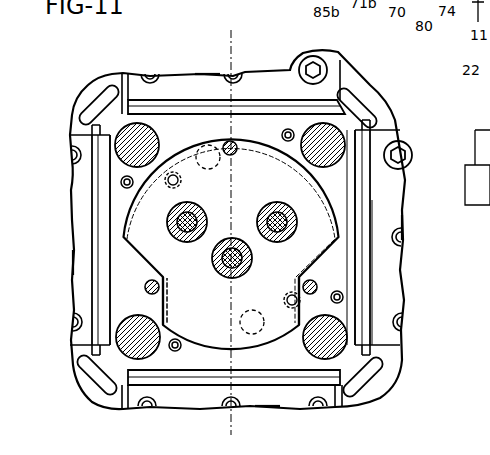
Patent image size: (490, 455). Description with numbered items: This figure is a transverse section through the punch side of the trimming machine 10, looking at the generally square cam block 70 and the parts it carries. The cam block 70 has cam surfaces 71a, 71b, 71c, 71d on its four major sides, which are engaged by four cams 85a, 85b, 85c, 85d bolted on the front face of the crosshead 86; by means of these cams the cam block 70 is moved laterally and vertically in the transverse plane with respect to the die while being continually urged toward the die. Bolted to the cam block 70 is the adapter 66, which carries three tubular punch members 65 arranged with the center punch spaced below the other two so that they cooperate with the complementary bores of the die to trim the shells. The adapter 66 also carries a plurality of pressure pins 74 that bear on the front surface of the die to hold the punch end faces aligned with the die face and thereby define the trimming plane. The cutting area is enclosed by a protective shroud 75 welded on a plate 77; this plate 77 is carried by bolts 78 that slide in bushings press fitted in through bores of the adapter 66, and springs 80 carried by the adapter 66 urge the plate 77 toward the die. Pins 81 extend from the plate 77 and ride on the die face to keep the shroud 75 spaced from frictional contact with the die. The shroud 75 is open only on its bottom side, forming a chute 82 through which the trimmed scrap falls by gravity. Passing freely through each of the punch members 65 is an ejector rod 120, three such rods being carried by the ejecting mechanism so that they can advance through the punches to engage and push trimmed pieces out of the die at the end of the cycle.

The hydraulic module assembly 10 is at (248, 31).
The punch member 65 is at (178, 222).
The adapter 66 is at (347, 202).
The cam block 70 is at (384, 283).
The cam surface 71a is at (183, 100).
The cam surface 71b is at (285, 382).
The cam surface 71c is at (92, 228).
The cam surface 71d is at (372, 258).
The pressure pin 74 is at (128, 134).
The protective shroud 75 is at (128, 202).
The plate 77 is at (317, 192).
The bolt 78 is at (180, 181).
The spring 80 is at (231, 240).
The pin 81 is at (251, 135).
The chute 82 is at (166, 305).
The cam 85a is at (209, 83).
The cam 85b is at (264, 400).
The cam 85c is at (78, 262).
The cam 85d is at (395, 228).
The crosshead 86 is at (97, 86).
The ejector rod 120 is at (277, 215).